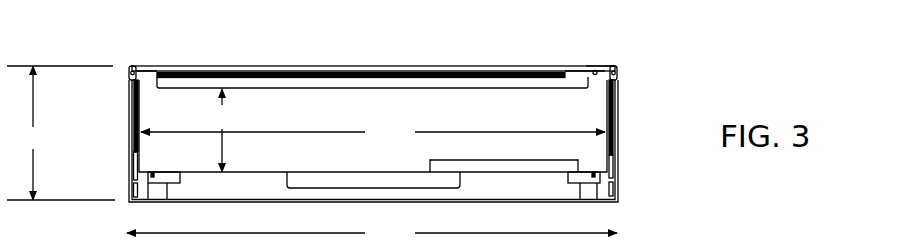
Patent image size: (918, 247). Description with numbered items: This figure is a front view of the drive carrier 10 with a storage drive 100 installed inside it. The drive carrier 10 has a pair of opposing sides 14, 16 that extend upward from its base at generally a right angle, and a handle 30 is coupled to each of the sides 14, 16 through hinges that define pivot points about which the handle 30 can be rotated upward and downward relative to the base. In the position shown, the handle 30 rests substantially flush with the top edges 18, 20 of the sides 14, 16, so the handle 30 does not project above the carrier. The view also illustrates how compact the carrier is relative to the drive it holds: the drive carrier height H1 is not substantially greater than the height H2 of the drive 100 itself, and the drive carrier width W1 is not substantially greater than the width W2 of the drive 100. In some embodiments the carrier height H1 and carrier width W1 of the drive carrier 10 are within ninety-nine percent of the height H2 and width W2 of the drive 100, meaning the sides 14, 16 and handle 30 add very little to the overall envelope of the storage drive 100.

The drive carrier 10 is at (593, 65).
The side 14 is at (128, 131).
The side 16 is at (618, 145).
The top edge 18 is at (133, 65).
The top edge 20 is at (613, 65).
The handle 30 is at (282, 63).
The storage drive 100 is at (590, 118).
The drive carrier height H1 is at (61, 133).
The drive height H2 is at (224, 130).
The drive carrier width W1 is at (372, 233).
The drive width W2 is at (373, 132).